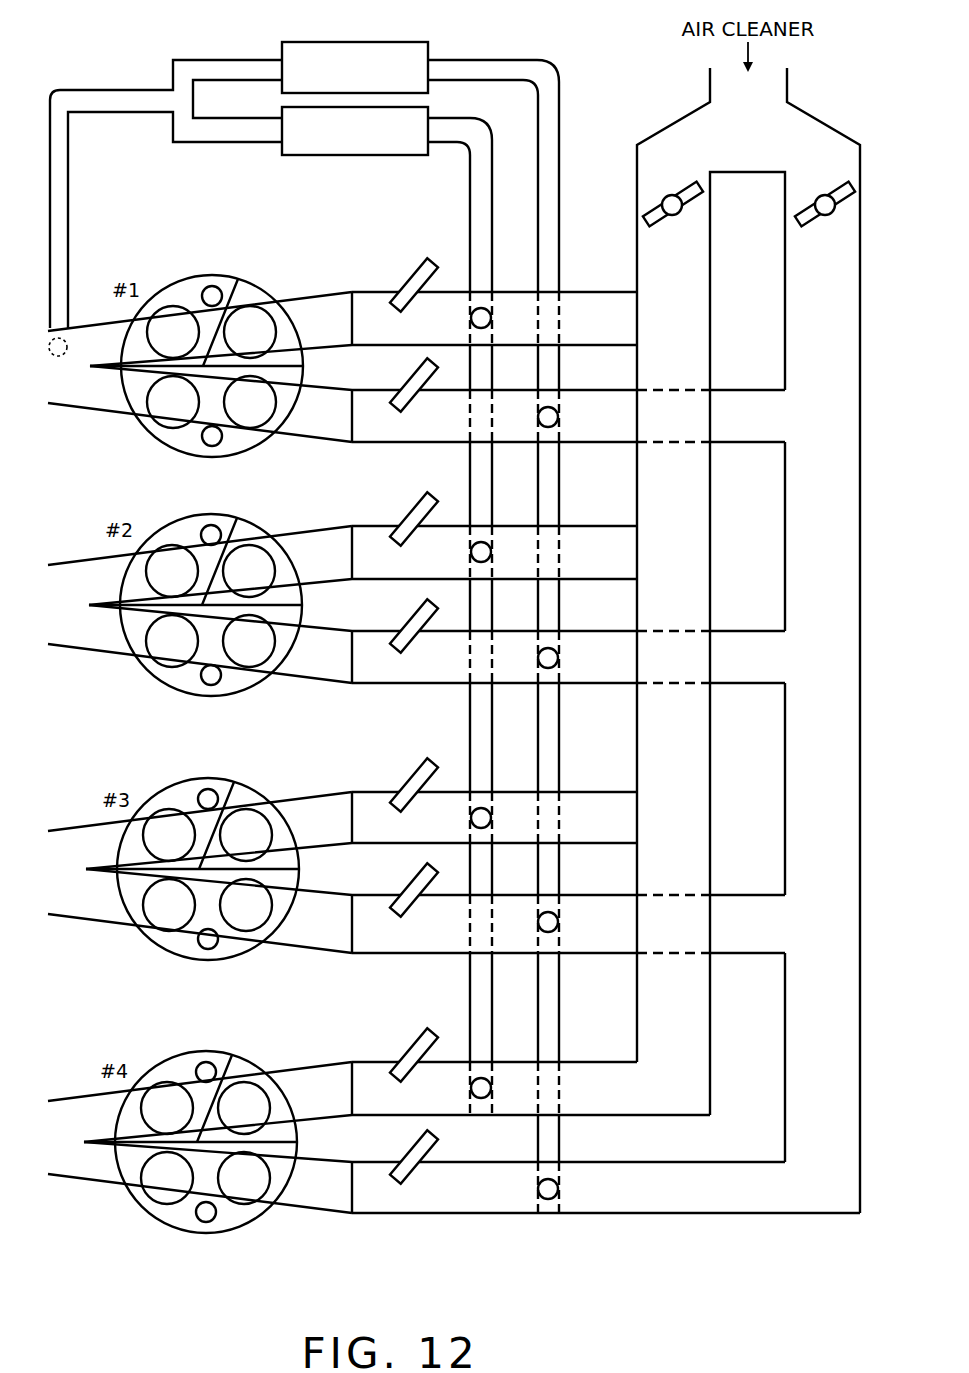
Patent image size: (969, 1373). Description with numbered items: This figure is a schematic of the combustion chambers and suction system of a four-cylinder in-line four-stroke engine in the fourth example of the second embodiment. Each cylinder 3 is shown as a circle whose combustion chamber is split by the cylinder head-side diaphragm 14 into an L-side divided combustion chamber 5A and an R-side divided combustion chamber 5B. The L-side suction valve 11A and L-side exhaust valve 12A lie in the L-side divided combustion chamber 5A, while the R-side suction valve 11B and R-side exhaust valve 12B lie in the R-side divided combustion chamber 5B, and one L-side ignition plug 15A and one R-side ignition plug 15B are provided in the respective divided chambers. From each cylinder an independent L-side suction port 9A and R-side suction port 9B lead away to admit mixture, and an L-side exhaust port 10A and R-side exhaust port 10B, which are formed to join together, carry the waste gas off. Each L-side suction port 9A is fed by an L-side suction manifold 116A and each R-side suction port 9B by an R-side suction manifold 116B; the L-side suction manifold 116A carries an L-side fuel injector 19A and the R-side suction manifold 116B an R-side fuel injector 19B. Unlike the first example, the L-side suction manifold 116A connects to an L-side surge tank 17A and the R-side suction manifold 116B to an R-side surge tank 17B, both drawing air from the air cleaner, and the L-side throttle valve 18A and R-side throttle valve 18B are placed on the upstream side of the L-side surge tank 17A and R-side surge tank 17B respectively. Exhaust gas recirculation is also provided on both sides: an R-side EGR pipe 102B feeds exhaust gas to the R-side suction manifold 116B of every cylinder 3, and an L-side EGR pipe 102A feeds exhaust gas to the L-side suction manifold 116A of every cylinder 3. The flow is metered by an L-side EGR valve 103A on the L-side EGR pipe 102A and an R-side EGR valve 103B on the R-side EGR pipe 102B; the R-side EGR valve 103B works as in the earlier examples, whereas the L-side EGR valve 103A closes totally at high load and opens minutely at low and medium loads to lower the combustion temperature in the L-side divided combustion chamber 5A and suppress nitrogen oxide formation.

The cylinder 3 is at (173, 280).
The L-side divided combustion chamber 5A is at (240, 440).
The R-side divided combustion chamber 5B is at (247, 295).
The L-side suction port 9A is at (320, 383).
The R-side suction port 9B is at (327, 292).
The L-side exhaust port 10A is at (85, 393).
The R-side exhaust port 10B is at (80, 337).
The L-side suction valve 11A is at (267, 417).
The R-side suction valve 11B is at (260, 326).
The L-side exhaust valve 12A is at (167, 413).
The R-side exhaust valve 12B is at (177, 323).
The cylinder head-side diaphragm 14 is at (238, 279).
The L-side ignition plug 15A is at (207, 440).
The R-side ignition plug 15B is at (207, 287).
The L-side surge tank 17A is at (783, 790).
The R-side surge tank 17B is at (712, 567).
The L-side throttle valve 18A is at (802, 207).
The R-side throttle valve 18B is at (655, 202).
The L-side fuel injector 19A is at (412, 387).
The R-side fuel injector 19B is at (415, 265).
The L-side EGR pipe 102A is at (493, 58).
The R-side EGR pipe 102B is at (470, 212).
The L-side EGR valve 103A is at (378, 42).
The R-side EGR valve 103B is at (328, 157).
The L-side suction manifold 116A is at (585, 388).
The R-side suction manifold 116B is at (588, 290).